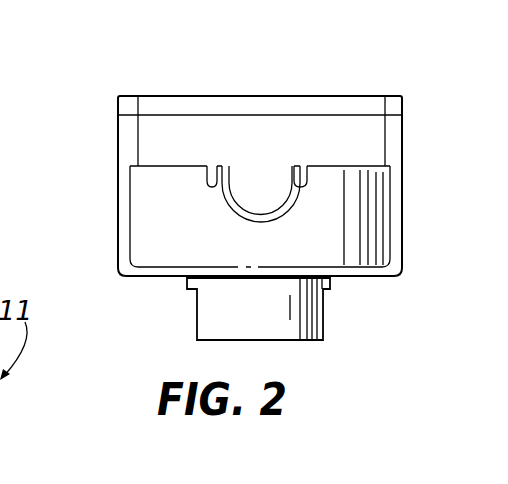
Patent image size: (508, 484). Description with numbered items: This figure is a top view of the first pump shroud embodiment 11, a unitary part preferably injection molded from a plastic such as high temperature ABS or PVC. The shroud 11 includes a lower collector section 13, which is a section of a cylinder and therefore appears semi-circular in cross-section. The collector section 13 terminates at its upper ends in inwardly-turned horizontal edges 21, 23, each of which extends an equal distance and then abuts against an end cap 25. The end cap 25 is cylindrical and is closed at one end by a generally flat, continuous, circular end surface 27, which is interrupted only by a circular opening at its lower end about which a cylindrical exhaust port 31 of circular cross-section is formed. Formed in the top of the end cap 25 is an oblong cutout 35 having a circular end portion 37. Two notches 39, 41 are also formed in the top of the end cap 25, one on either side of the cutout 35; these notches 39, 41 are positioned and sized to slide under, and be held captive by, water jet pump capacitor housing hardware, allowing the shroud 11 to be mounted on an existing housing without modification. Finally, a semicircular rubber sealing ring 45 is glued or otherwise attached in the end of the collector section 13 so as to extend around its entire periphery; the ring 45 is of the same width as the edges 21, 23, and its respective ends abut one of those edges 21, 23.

The pump shroud 11 is at (98, 106).
The lower collector section 13 is at (245, 146).
The inwardly-turned horizontal edge 21 is at (118, 130).
The inwardly-turned horizontal edge 23 is at (393, 133).
The end cap 25 is at (160, 220).
The end surface 27 is at (167, 278).
The exhaust port 31 is at (300, 312).
The oblong cutout 35 is at (270, 176).
The circular end portion 37 is at (270, 222).
The notch 39 is at (308, 184).
The notch 41 is at (210, 177).
The sealing ring 45 is at (318, 102).